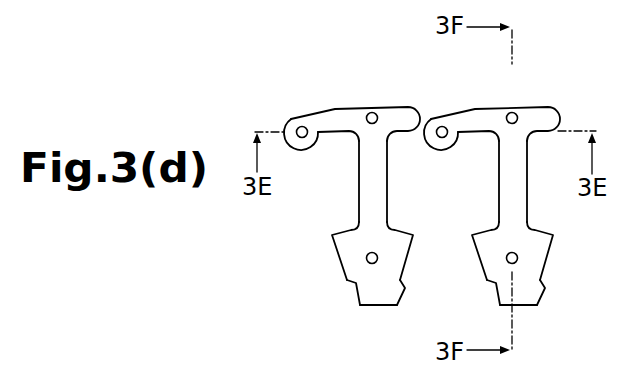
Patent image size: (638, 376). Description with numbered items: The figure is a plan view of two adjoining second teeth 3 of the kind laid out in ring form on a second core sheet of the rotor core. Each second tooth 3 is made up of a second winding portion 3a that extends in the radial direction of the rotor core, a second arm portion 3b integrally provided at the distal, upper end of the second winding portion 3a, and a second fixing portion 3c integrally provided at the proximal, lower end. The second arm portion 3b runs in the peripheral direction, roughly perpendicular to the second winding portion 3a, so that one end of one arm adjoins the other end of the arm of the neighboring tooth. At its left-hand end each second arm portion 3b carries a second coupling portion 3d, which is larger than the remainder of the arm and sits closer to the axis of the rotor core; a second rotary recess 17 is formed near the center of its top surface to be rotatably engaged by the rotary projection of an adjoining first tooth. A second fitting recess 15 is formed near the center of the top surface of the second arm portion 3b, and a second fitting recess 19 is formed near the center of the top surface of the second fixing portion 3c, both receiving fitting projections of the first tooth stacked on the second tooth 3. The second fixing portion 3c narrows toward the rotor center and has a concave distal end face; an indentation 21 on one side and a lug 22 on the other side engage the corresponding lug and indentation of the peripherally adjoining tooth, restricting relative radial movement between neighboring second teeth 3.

The second tooth 3 is at (428, 178).
The second winding portion 3a is at (508, 185).
The second arm portion 3b is at (410, 97).
The second fixing portion 3c is at (346, 247).
The second coupling portion 3d is at (292, 118).
The second fitting recess 15 is at (372, 112).
The second rotary recess 17 is at (301, 126).
The second fitting recess 19 is at (506, 258).
The indentation 21 is at (355, 285).
The lug 22 is at (404, 289).